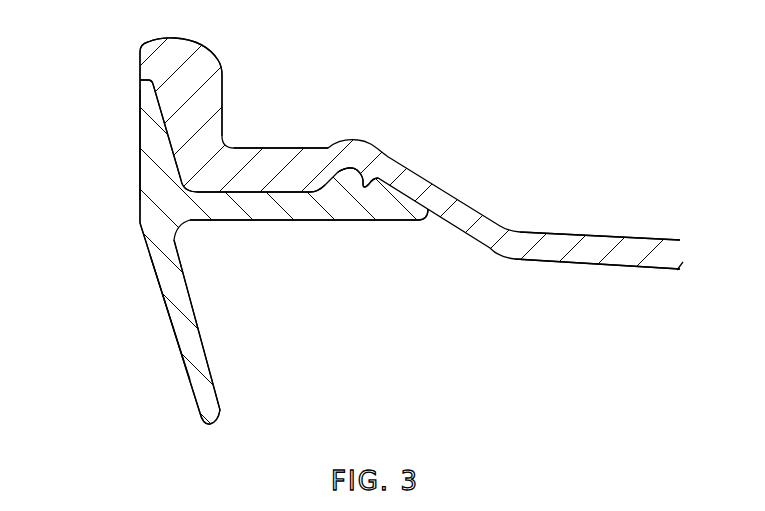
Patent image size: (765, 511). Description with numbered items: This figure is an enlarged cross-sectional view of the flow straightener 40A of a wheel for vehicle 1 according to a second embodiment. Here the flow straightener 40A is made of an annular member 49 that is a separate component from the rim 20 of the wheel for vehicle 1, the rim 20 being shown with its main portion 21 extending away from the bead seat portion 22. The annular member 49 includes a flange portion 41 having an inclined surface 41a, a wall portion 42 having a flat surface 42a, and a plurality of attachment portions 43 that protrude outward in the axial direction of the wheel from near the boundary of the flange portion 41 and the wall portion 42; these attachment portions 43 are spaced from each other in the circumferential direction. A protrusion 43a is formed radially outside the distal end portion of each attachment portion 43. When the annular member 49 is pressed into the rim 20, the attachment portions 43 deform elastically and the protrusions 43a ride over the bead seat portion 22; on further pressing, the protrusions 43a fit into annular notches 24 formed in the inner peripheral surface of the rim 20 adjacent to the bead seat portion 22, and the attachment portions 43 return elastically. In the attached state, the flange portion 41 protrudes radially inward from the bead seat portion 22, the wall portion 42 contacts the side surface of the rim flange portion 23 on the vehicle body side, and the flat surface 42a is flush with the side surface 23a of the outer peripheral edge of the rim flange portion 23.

The wheel for vehicle 1 is at (565, 157).
The rim 20 is at (487, 167).
The panel main portion 21 is at (613, 238).
The bead seat portion 22 is at (273, 148).
The rim flange portion 23 is at (192, 62).
The side surface 23a is at (140, 63).
The annular notch 24 is at (377, 178).
The flow straightener 40A is at (135, 238).
The flange portion 41 is at (205, 367).
The inclined surface 41a is at (177, 338).
The wall portion 42 is at (150, 185).
The flat surface 42a is at (140, 123).
The attachment portion 43 is at (300, 210).
The protrusion 43a is at (342, 168).
The annular member 49 is at (198, 238).